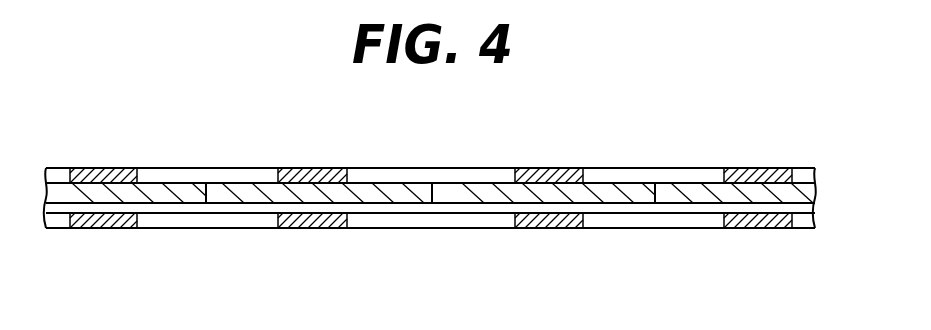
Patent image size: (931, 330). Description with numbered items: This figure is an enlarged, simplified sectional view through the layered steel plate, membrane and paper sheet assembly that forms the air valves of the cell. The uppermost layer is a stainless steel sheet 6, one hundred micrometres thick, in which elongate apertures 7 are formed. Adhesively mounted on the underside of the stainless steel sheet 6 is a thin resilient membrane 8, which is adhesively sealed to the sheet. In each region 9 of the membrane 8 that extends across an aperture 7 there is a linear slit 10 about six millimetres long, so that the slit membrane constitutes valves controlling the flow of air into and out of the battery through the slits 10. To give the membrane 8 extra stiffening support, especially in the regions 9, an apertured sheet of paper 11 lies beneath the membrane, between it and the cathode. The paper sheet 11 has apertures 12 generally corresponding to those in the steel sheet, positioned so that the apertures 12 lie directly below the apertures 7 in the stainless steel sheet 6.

The stainless steel sheet 6 is at (549, 172).
The elongate apertures 7 is at (652, 175).
The thin resilient membrane 8 is at (806, 195).
The region of the membrane 9 is at (192, 182).
The linear slit 10 is at (207, 189).
The apertured sheet of paper 11 is at (787, 218).
The apertures 12 is at (616, 216).